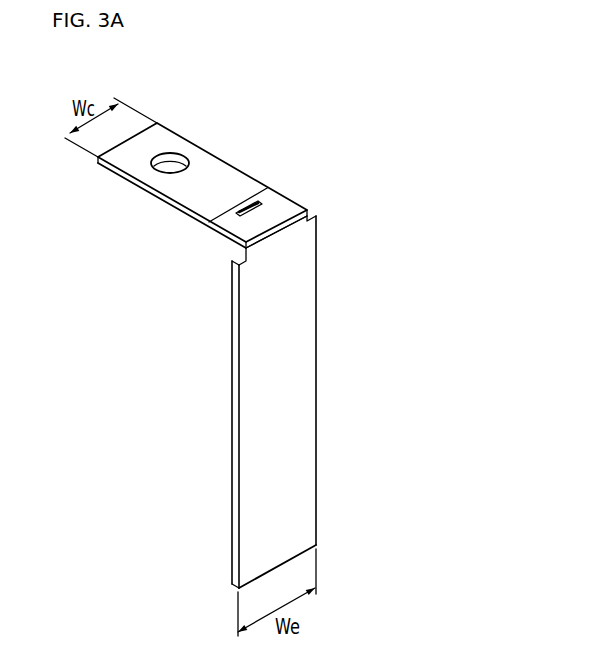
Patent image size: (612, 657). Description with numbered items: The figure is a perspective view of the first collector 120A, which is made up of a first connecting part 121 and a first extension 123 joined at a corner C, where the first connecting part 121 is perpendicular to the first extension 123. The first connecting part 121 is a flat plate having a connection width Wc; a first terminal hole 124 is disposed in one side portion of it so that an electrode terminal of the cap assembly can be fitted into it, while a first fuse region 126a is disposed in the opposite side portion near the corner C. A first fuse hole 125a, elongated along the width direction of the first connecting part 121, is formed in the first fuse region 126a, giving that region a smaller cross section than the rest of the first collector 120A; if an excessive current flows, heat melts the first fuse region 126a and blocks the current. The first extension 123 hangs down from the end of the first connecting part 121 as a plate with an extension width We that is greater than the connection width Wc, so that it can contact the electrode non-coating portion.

The first collector 120A is at (326, 203).
The first connecting part 121 is at (212, 168).
The first extension 123 is at (298, 335).
The first terminal hole 124 is at (168, 158).
The first fuse hole 125a is at (248, 200).
The first fuse region 126a is at (272, 197).
The corner C is at (280, 225).